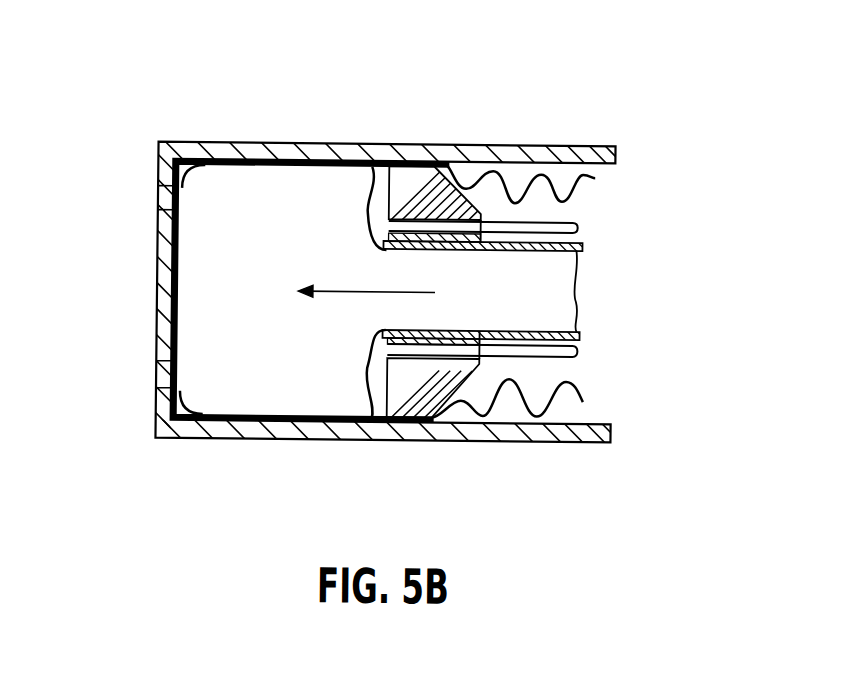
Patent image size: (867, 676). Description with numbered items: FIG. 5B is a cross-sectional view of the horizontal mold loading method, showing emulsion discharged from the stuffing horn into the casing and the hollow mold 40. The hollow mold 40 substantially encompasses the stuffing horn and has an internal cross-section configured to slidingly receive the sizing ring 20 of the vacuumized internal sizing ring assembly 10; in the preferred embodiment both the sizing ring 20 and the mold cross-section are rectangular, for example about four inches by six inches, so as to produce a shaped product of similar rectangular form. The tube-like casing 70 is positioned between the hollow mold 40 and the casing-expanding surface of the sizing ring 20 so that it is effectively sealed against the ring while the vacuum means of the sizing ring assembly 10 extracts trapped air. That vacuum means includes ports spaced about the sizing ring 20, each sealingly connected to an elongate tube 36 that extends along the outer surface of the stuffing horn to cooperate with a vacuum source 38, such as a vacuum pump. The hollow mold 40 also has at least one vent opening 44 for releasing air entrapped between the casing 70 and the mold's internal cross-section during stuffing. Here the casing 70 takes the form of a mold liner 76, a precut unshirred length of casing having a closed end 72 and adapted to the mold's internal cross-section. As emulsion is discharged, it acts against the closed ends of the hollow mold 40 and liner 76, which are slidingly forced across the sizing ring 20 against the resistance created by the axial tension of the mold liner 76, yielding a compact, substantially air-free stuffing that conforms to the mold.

The sizing ring assembly 10 is at (230, 402).
The sizing ring 20 is at (410, 404).
The elongate tube 36 is at (583, 356).
The vacuum source 38 is at (592, 225).
The hollow mold 40 is at (496, 124).
The vent opening 44 is at (150, 200).
The casing 70 is at (373, 152).
The closed end 72 is at (162, 290).
The mold liner 76 is at (575, 192).